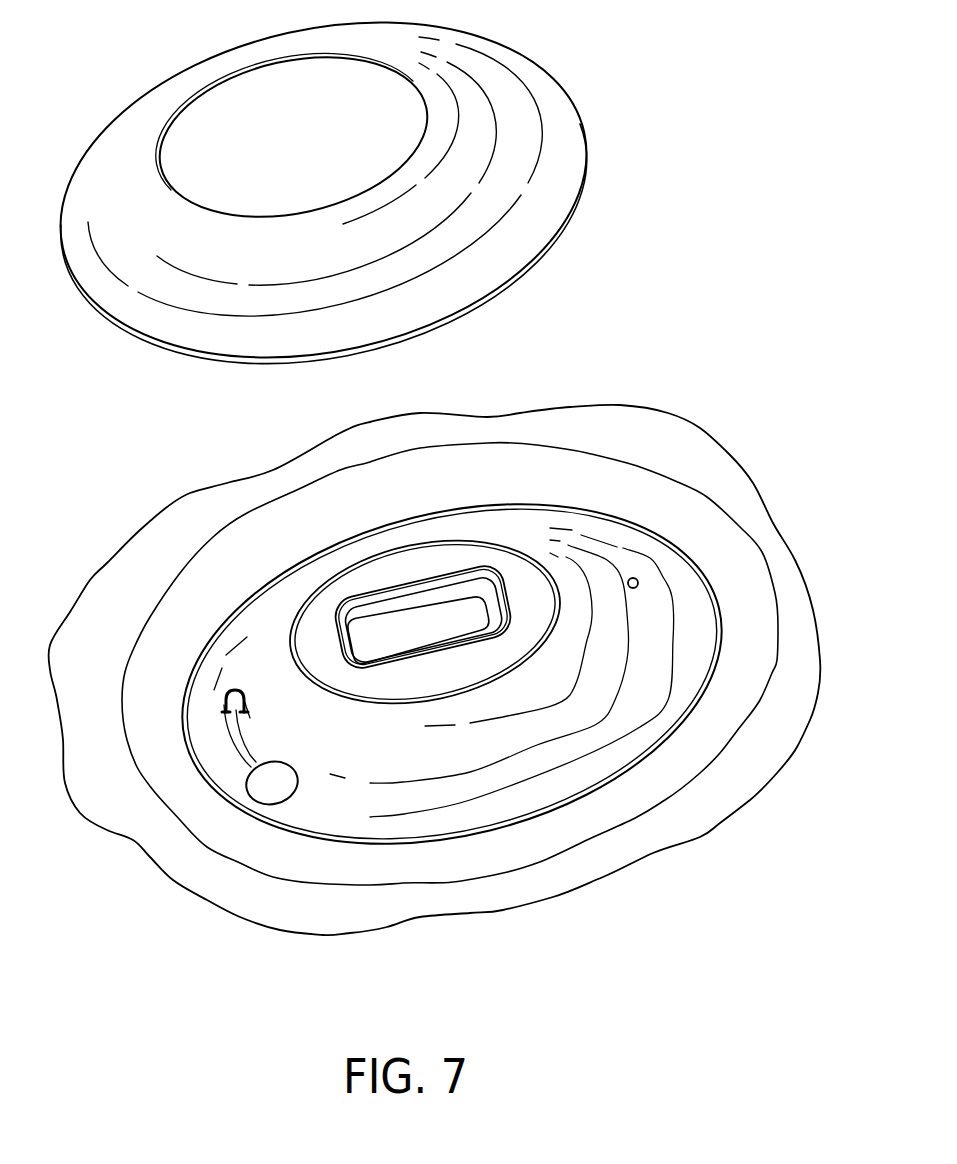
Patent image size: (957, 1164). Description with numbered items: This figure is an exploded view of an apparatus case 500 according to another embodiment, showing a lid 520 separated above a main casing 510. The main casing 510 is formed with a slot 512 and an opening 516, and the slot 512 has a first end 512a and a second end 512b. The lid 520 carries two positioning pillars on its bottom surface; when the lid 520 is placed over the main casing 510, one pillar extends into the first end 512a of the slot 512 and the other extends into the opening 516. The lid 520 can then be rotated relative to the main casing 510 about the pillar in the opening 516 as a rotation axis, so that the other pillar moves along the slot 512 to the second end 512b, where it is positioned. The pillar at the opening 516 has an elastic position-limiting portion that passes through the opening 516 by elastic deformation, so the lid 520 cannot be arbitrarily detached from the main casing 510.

The apparatus case 500 is at (786, 1072).
The main casing 510 is at (73, 722).
The slot 512 is at (245, 752).
The first end 512a is at (303, 787).
The second end 512b is at (227, 688).
The opening 516 is at (633, 577).
The lid 520 is at (153, 110).